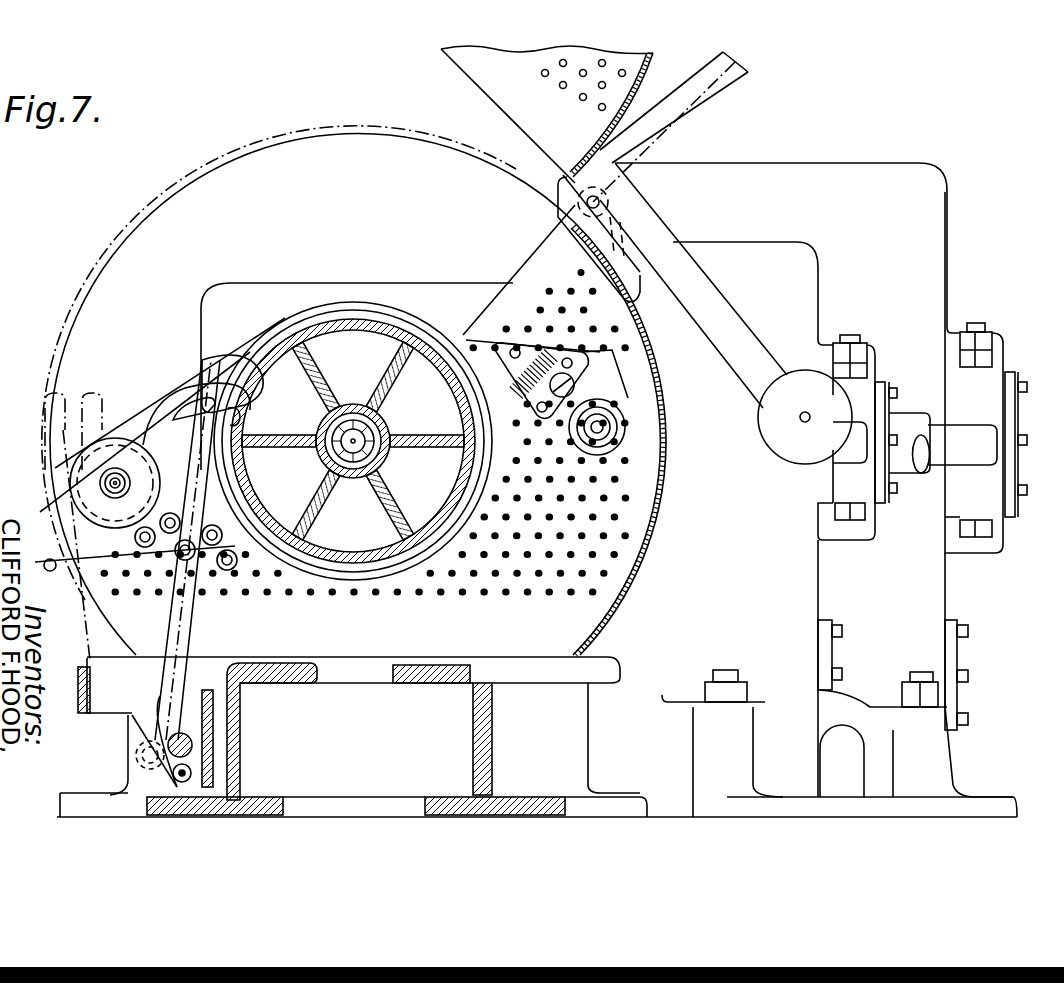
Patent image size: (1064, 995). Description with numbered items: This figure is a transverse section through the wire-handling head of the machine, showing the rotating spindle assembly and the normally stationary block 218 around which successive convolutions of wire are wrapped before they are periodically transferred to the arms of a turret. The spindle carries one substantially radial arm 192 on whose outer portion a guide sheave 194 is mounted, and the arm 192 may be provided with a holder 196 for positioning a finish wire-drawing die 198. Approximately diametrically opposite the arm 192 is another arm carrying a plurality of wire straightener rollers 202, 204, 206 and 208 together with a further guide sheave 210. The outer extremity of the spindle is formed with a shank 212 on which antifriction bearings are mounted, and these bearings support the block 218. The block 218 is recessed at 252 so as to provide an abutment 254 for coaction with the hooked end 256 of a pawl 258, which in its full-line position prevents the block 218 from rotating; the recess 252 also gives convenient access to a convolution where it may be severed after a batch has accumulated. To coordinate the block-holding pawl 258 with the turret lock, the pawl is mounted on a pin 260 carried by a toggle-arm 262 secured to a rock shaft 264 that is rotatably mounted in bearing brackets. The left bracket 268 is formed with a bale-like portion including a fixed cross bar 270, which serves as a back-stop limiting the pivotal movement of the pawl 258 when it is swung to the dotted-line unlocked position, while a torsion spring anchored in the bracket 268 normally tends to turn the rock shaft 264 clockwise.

The radial arm 192 is at (478, 340).
The guide sheave 194 is at (625, 425).
The holder 196 is at (548, 346).
The finish wire-drawing die 198 is at (493, 350).
The wire straightener roller 202 is at (160, 400).
The wire straightener roller 204 is at (172, 378).
The wire straightener roller 206 is at (178, 370).
The wire straightener roller 208 is at (228, 570).
The guide sheave 210 is at (70, 485).
The shank 212 is at (352, 472).
The block 218 is at (355, 318).
The recess 252 is at (255, 340).
The abutment 254 is at (240, 446).
The hooked end 256 is at (250, 408).
The pawl 258 is at (178, 638).
The pin 260 is at (192, 773).
The toggle-arm 262 is at (193, 745).
The rock shaft 264 is at (230, 722).
The left bracket 268 is at (215, 706).
The cross bar 270 is at (80, 713).